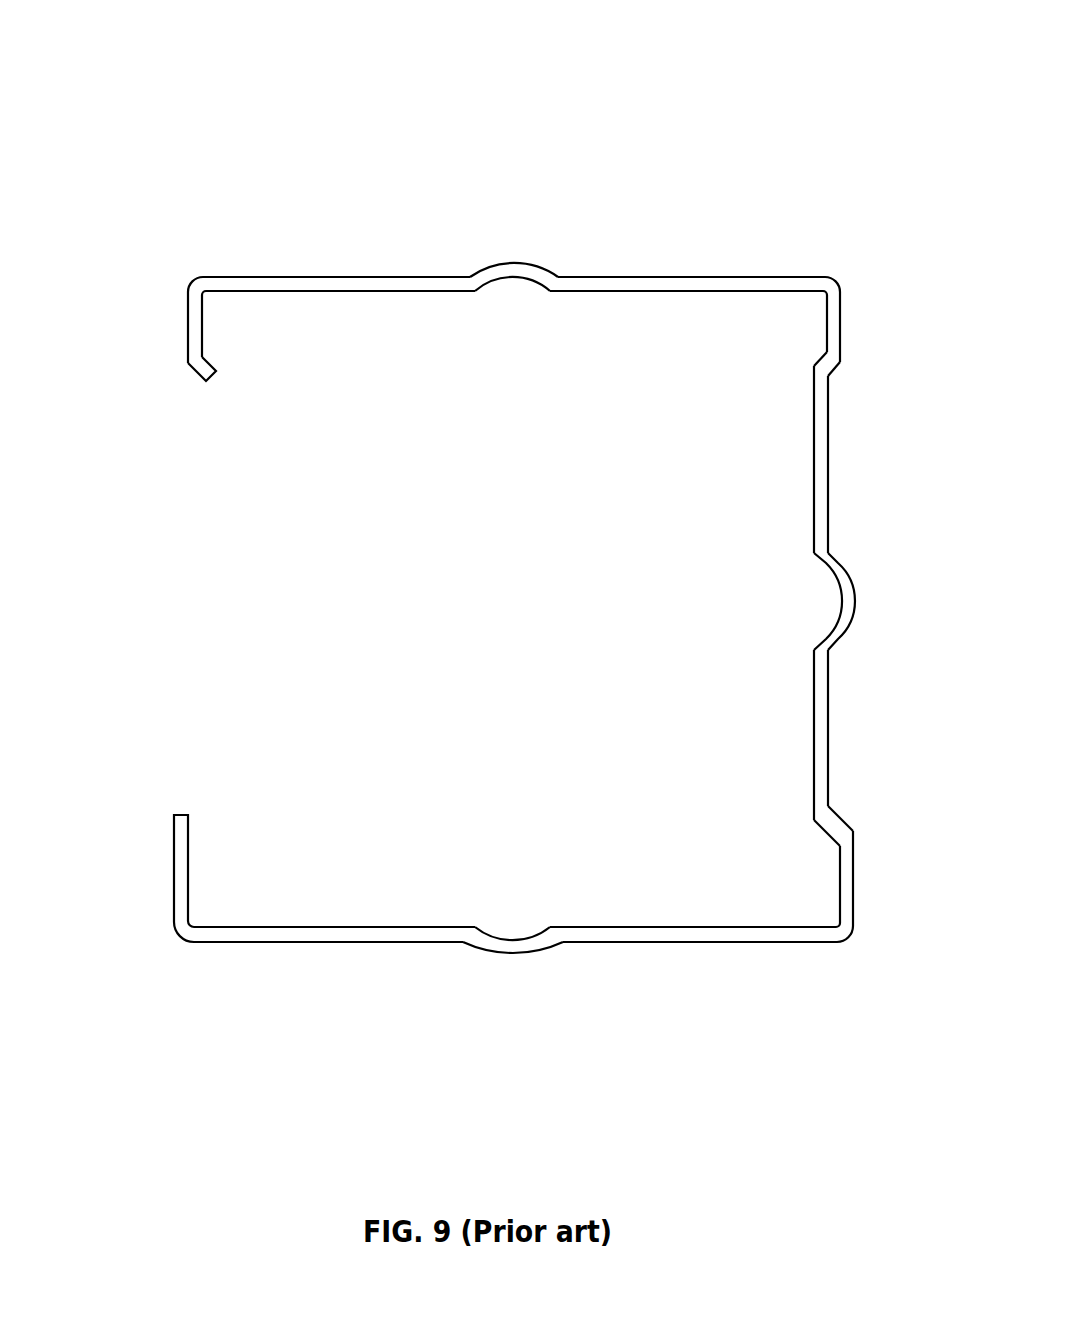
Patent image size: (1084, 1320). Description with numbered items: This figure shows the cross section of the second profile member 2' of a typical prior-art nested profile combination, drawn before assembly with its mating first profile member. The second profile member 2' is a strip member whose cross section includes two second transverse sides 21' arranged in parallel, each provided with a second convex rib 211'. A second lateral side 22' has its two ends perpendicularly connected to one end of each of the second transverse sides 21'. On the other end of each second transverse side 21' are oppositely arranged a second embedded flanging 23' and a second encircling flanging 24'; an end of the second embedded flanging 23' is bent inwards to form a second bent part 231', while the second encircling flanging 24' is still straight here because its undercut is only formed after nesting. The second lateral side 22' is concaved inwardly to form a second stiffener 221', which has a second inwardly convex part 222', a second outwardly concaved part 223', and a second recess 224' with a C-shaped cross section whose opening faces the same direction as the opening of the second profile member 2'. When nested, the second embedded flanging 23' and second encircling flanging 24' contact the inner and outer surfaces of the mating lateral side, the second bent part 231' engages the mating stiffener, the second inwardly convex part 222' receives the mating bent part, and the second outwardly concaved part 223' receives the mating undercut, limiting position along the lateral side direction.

The second profile member 2' is at (512, 558).
The second transverse sides 21' is at (513, 616).
The second convex ribs 211' is at (486, 609).
The second lateral side 22' is at (770, 609).
The second stiffener 221' is at (705, 593).
The second inwardly convex part 222' is at (761, 610).
The second outwardly concaved part 223' is at (892, 609).
The second recess 224' is at (745, 609).
The second embedded flanging 23' is at (138, 310).
The second bent part 231' is at (156, 440).
The second encircling flanging 24' is at (127, 838).